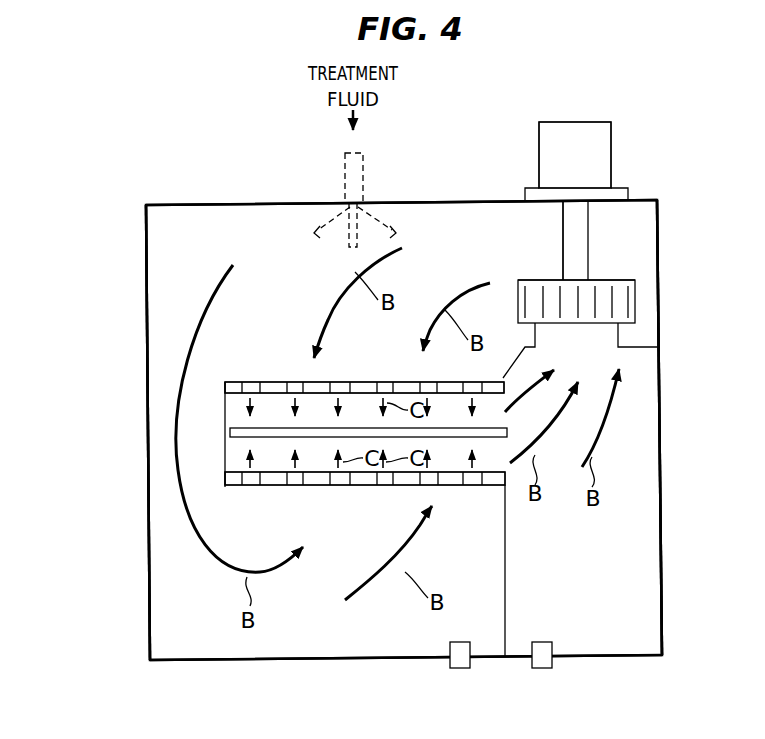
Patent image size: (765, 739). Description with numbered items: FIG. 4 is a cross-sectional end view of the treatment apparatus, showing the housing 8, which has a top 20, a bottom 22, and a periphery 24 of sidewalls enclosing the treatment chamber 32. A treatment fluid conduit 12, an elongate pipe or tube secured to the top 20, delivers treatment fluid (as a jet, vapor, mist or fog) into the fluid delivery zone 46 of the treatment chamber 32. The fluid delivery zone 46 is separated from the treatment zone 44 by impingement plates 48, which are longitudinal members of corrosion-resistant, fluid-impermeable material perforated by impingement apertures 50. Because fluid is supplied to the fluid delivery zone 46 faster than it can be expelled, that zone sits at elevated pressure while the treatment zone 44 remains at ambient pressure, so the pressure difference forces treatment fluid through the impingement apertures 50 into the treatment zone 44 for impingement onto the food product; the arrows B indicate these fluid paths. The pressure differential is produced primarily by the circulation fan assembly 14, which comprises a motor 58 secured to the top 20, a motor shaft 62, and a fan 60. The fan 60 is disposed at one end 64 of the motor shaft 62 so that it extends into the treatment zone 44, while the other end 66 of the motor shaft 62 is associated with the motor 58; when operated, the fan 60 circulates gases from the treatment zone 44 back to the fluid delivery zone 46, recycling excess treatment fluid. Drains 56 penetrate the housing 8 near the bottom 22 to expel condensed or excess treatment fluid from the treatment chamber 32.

The housing 8 is at (176, 196).
The treatment fluid conduit 12 is at (368, 176).
The circulation fan assembly 14 is at (579, 118).
The top 20 is at (245, 205).
The bottom 22 is at (260, 660).
The periphery 24 is at (150, 485).
The treatment chamber 32 is at (118, 350).
The treatment zone 44 is at (645, 393).
The fluid delivery zone 46 is at (160, 283).
The impingement plates 48 is at (358, 382).
The impingement apertures 50 is at (288, 382).
The drains 56 is at (460, 668).
The motor 58 is at (600, 167).
The fan 60 is at (637, 302).
The motor shaft 62 is at (583, 258).
The end of motor shaft 64 is at (563, 280).
The end of motor shaft 66 is at (557, 203).